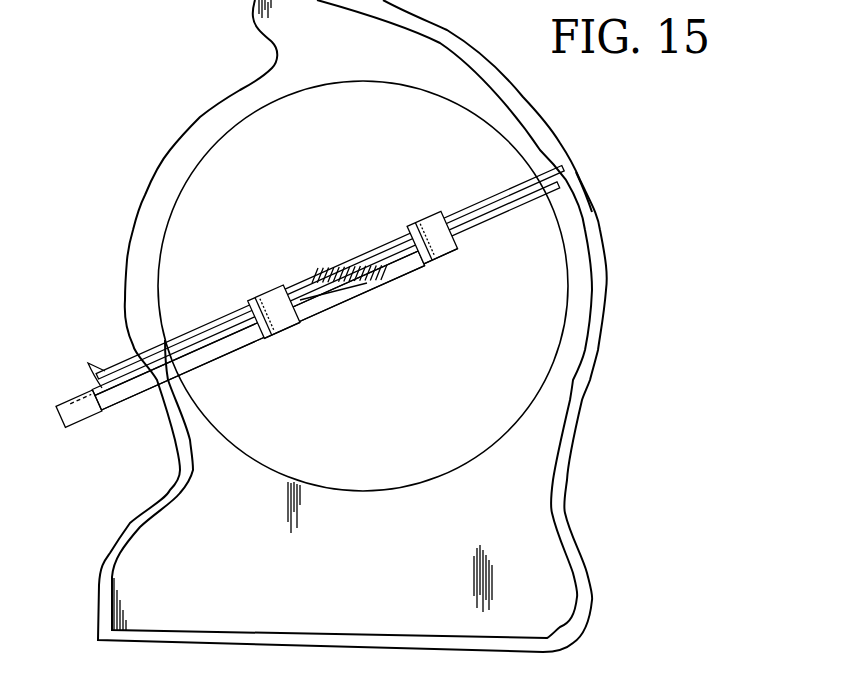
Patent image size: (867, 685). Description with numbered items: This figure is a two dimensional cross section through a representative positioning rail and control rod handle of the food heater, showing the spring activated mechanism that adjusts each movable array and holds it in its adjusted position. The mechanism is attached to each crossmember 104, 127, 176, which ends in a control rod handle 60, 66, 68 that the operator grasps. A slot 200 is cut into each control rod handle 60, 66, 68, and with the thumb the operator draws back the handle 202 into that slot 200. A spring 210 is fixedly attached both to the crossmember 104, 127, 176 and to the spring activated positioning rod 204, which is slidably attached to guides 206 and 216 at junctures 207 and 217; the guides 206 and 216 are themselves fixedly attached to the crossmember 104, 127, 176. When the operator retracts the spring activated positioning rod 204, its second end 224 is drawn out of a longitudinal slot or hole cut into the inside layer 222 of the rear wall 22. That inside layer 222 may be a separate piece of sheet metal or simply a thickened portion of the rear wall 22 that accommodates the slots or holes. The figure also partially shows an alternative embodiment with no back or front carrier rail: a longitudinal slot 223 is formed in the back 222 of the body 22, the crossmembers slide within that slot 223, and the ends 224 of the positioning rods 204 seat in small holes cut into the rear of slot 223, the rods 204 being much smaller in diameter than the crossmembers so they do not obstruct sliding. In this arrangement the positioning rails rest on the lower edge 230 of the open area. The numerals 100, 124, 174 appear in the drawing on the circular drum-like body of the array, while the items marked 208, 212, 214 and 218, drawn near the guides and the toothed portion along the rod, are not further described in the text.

The rear wall 22 is at (377, 326).
The control rod handle 60 is at (64, 434).
The control rod handle 66 is at (64, 434).
The control rod handle 68 is at (67, 429).
The drum 100 is at (350, 272).
The drum 124 is at (350, 272).
The drum 174 is at (222, 133).
The crossmember 104 is at (270, 330).
The crossmember 127 is at (270, 330).
The crossmember 176 is at (323, 302).
The slot 200 is at (64, 414).
The handle 202 is at (103, 372).
The spring activated positioning rod 204 is at (197, 320).
The guide 206 is at (247, 319).
The juncture 207 is at (248, 301).
The bottom of first carriage 208 is at (266, 341).
The spring 210 is at (311, 278).
The rack 212 is at (332, 253).
The rod edge 214 is at (386, 274).
The guide 216 is at (425, 237).
The juncture 217 is at (408, 227).
The bottom of second carriage 218 is at (425, 263).
The inside layer 222 is at (540, 149).
The longitudinal slot 223 is at (581, 179).
The second end 224 is at (566, 163).
The lower edge 230 is at (148, 390).